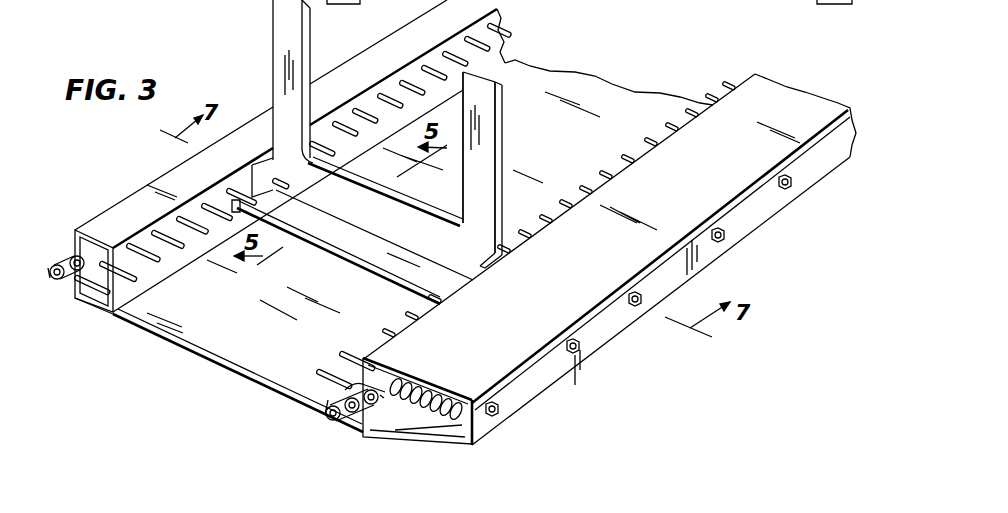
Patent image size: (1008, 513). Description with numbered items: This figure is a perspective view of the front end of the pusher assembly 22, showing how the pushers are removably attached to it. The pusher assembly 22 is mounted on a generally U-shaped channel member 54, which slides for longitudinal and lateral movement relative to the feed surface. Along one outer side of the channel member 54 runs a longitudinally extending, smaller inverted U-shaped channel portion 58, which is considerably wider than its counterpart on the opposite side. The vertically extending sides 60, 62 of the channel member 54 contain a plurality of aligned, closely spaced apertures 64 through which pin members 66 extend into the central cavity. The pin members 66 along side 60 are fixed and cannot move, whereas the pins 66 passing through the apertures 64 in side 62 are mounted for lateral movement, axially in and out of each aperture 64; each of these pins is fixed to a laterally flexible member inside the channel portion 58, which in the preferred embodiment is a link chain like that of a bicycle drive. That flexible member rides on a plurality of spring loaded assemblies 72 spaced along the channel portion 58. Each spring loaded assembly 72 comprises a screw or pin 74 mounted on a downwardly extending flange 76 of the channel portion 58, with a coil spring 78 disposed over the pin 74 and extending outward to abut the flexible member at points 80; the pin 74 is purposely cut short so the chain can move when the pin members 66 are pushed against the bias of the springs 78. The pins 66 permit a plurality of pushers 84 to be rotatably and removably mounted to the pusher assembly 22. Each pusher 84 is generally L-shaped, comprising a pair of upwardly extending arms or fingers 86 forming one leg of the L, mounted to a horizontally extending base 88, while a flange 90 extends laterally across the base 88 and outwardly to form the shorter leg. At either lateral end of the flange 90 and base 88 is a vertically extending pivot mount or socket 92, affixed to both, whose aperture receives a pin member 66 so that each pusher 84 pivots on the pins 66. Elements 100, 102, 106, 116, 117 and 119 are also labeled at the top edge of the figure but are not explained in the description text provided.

The pusher assembly 22 is at (182, 367).
The channel member 54 is at (227, 372).
The channel portion 58 is at (528, 362).
The vertically extending side 60 is at (500, 10).
The vertically extending side 62 is at (350, 372).
The apertures 64 is at (212, 196).
The pin members 66 is at (553, 208).
The spring loaded assemblies 72 is at (445, 428).
The screw or pin 74 is at (472, 422).
The downwardly extending flange 76 is at (588, 340).
The coil spring 78 is at (418, 392).
The points 80 is at (407, 410).
The pusher 84 is at (315, 56).
The arms or fingers 86 is at (273, 48).
The base 88 is at (410, 205).
The flange 90 is at (345, 255).
The pivot mount or socket 92 is at (270, 160).
The component 100 is at (139, 2).
The component 102 is at (202, 2).
The component 106 is at (72, 2).
The component 116 is at (804, 0).
The component 117 is at (833, 4).
The component 119 is at (251, 2).